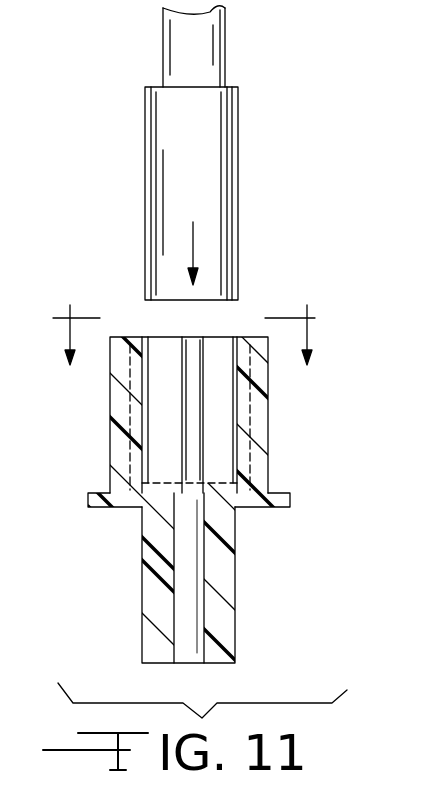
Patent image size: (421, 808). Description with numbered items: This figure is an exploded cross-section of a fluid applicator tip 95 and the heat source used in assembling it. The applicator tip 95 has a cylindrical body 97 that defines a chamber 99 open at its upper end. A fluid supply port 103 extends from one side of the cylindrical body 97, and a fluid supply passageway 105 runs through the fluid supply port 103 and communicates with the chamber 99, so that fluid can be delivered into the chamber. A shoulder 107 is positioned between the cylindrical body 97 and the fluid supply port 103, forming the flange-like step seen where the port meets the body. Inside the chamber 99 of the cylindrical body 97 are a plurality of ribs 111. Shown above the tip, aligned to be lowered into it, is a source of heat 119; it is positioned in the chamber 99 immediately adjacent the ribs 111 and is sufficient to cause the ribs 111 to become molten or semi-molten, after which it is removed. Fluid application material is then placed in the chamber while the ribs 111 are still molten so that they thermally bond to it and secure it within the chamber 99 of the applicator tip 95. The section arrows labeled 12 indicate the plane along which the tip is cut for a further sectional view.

The section line 12- 12 is at (190, 353).
The applicator tip 95 is at (254, 282).
The cylindrical body 97 is at (268, 425).
The chamber 99 is at (163, 442).
The fluid supply port 103 is at (235, 588).
The fluid supply passageway 105 is at (195, 655).
The shoulder 107 is at (290, 497).
The ribs 111 is at (200, 357).
The source of heat 119 is at (238, 121).